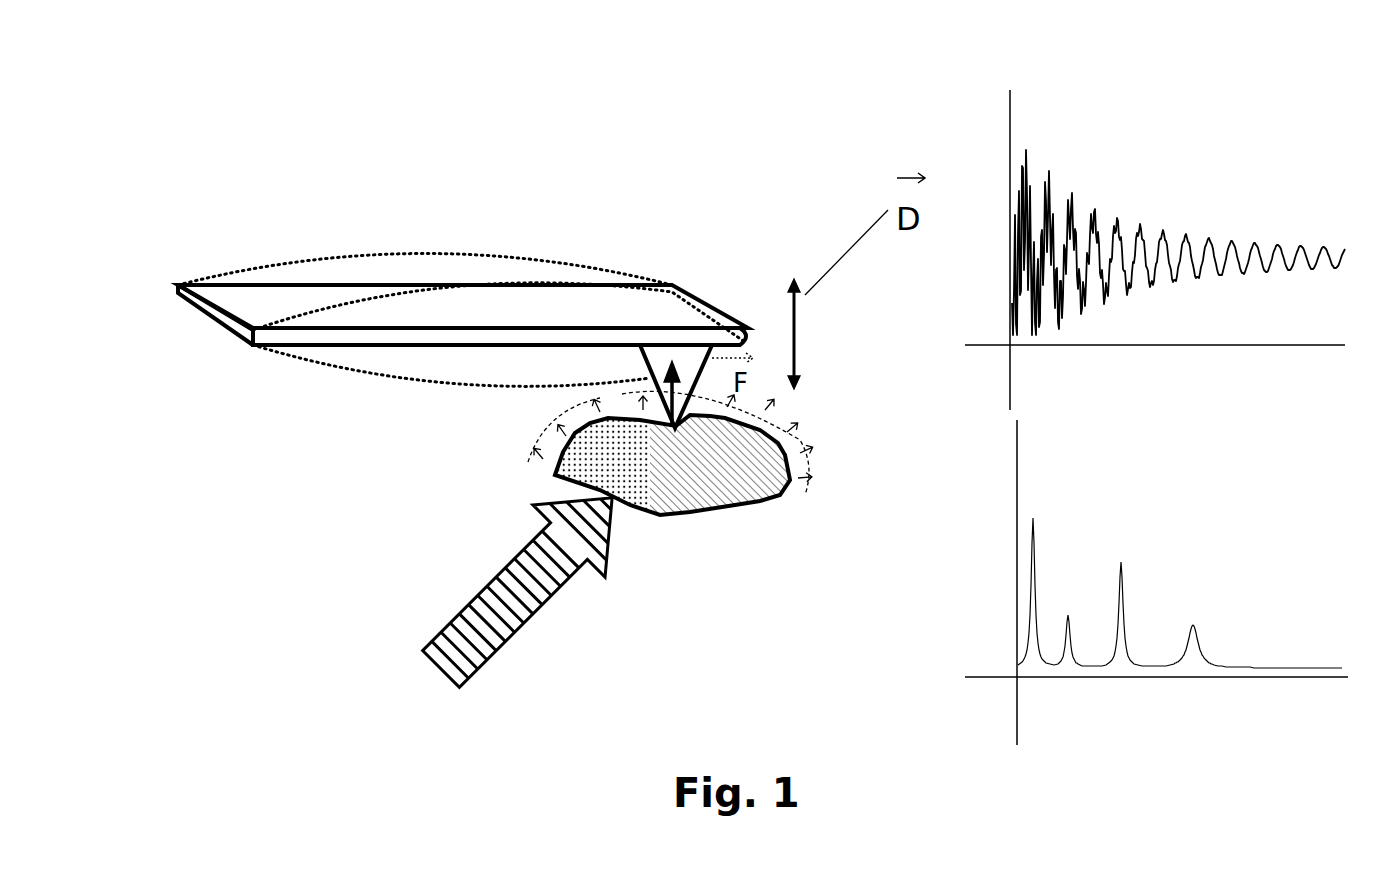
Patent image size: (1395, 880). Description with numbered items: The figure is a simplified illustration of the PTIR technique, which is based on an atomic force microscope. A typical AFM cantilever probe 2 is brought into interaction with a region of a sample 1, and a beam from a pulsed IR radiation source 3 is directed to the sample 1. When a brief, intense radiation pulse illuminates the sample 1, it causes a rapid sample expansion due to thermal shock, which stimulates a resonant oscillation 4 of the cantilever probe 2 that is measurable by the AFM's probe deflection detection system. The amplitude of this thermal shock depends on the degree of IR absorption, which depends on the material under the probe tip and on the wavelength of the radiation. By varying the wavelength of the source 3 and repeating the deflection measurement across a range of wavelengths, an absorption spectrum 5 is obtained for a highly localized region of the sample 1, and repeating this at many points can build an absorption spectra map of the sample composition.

The sample 1 is at (840, 490).
The AFM cantilever probe 2 is at (203, 320).
The pulsed IR radiation source 3 is at (435, 602).
The resonant oscillation 4 is at (1145, 222).
The absorption spectrum 5 is at (1233, 532).